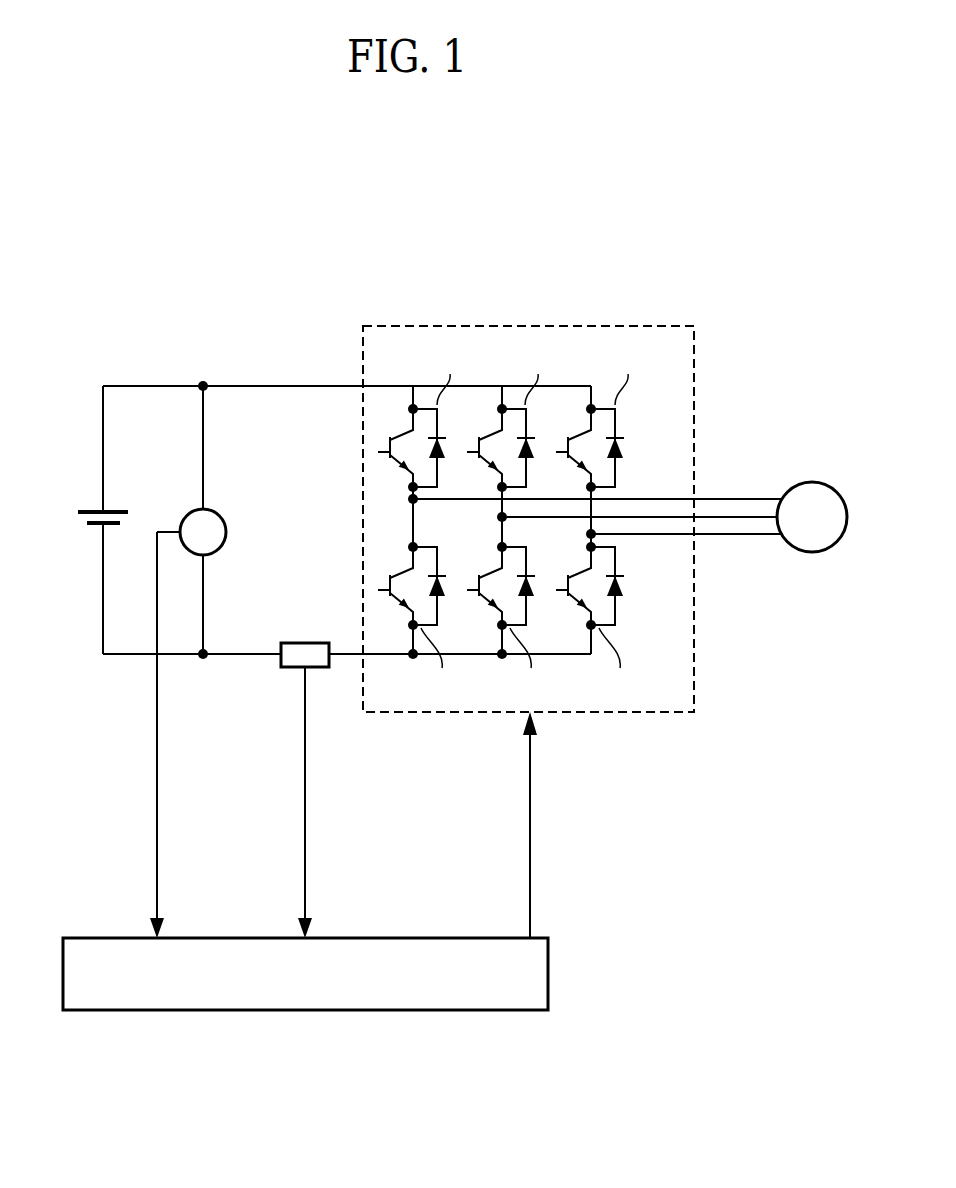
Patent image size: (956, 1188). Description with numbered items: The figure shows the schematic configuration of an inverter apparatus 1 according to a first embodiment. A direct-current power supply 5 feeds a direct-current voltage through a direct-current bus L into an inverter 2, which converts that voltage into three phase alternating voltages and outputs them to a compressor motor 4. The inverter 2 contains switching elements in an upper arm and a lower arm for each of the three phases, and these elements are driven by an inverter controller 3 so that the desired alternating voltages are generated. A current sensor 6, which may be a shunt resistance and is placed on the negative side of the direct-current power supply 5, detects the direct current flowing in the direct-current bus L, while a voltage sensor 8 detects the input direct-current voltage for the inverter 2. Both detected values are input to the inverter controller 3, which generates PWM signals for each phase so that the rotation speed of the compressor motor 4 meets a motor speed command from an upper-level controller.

The inverter apparatus 1 is at (708, 298).
The inverter 2 is at (573, 326).
The inverter controller 3 is at (548, 973).
The compressor motor 4 is at (810, 482).
The direct-current power supply 5 is at (97, 508).
The current sensor 6 is at (305, 643).
The voltage sensor 8 is at (226, 532).
The direct-current bus L is at (243, 386).